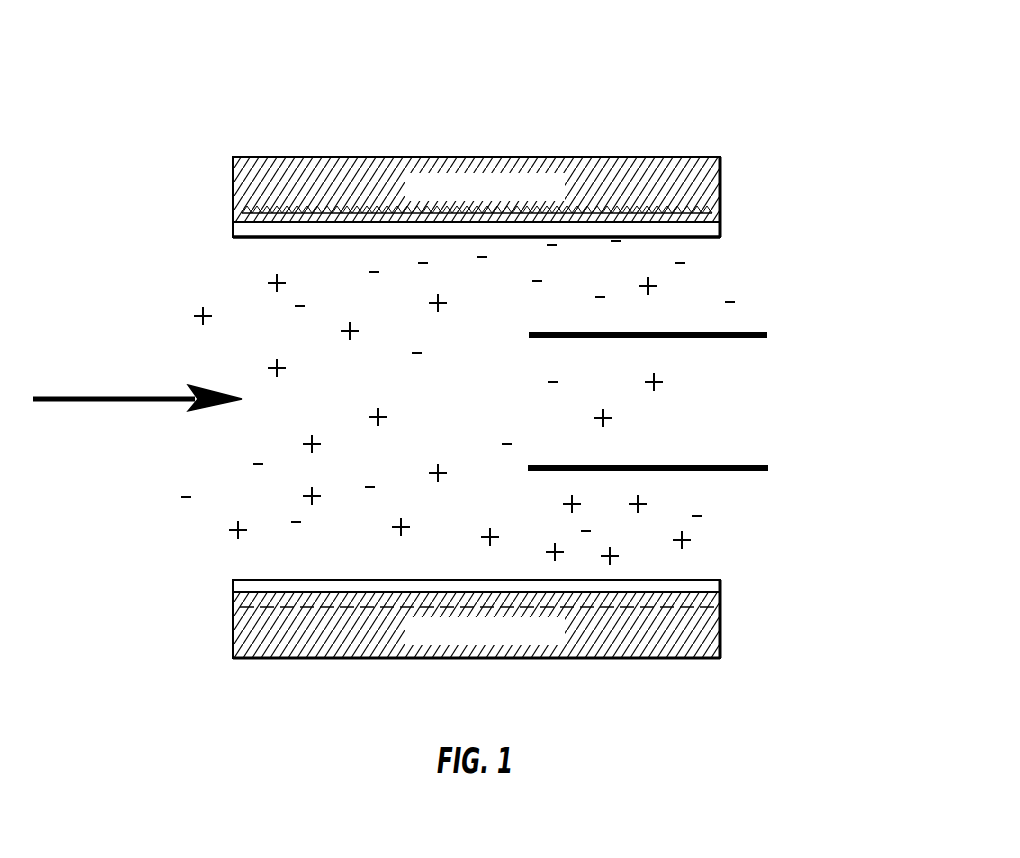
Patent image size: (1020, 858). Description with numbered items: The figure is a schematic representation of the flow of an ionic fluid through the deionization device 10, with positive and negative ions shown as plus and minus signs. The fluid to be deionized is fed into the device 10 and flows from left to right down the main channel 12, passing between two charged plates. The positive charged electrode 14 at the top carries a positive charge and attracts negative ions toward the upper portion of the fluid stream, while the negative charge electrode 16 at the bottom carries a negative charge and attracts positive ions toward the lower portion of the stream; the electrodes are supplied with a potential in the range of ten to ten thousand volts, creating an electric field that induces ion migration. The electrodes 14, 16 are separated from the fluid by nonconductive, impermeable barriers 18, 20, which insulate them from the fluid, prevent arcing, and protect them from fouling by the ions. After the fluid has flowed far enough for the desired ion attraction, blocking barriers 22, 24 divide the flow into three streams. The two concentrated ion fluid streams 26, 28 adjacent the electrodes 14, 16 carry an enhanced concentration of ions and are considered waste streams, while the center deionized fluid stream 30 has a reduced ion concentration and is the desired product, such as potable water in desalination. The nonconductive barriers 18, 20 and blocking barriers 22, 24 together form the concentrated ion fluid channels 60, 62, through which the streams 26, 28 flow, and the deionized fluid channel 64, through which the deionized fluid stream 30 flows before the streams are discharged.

The device 10 is at (641, 89).
The main channel 12 is at (130, 458).
The positive charged electrode 14 is at (334, 157).
The negative charge electrode 16 is at (578, 660).
The nonconductive, impermeable barrier 18 is at (720, 228).
The nonconductive, impermeable barrier 20 is at (722, 588).
The blocking barrier 22 is at (770, 331).
The blocking barrier 24 is at (770, 468).
The concentrated ion fluid stream 26 is at (672, 292).
The concentrated ion fluid stream 28 is at (708, 536).
The deionized fluid stream 30 is at (690, 423).
The concentrated ion fluid channel 60 is at (693, 250).
The concentrated ion fluid channel 62 is at (738, 494).
The deionized fluid channel 64 is at (732, 371).